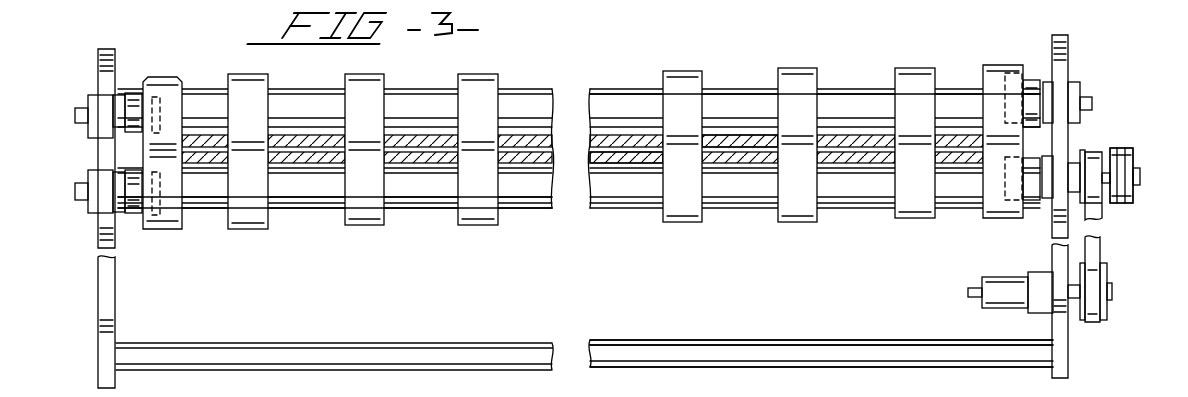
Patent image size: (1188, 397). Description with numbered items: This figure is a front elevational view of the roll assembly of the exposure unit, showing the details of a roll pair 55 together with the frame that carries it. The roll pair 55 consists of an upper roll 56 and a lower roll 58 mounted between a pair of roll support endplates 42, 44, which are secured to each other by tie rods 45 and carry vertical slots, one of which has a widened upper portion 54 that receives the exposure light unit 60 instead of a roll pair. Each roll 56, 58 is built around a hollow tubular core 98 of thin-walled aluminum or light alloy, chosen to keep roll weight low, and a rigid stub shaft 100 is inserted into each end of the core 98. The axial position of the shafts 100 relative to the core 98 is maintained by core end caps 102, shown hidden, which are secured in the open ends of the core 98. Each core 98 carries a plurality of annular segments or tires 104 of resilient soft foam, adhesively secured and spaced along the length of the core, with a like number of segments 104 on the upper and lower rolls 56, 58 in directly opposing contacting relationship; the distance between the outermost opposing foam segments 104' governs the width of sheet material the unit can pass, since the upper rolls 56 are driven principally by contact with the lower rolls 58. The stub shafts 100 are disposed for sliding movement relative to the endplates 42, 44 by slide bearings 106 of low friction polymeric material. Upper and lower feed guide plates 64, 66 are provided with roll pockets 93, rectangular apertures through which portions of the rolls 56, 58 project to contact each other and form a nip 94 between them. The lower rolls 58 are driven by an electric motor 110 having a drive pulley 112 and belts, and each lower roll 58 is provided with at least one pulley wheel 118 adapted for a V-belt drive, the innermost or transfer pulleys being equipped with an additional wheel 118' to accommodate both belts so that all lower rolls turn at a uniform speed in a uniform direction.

The roll support endplate 42 is at (110, 283).
The roll support endplate 44 is at (1058, 250).
The tie rods 45 is at (1020, 352).
The widened upper portion 54 is at (821, 368).
The roll pair 55 is at (223, 66).
The upper roll 56 is at (418, 81).
The lower roll 58 is at (312, 219).
The exposure light unit 60 is at (821, 371).
The upper feed guide plate 64 is at (748, 137).
The lower feed guide plate 66 is at (627, 157).
The roll pockets 93 is at (387, 137).
The nip 94 is at (233, 150).
The hollow tubular core 98 is at (518, 208).
The stub shaft 100 is at (85, 112).
The core end cap 102 is at (138, 78).
The annular segments 104 is at (567, 131).
The outermost opposing foam segments 104' is at (596, 164).
The slide bearing 106 is at (92, 213).
The electric motor 110 is at (987, 292).
The drive pulley 112 is at (1110, 310).
The pulley wheel 118 is at (1115, 160).
The additional wheel 118' is at (1149, 187).